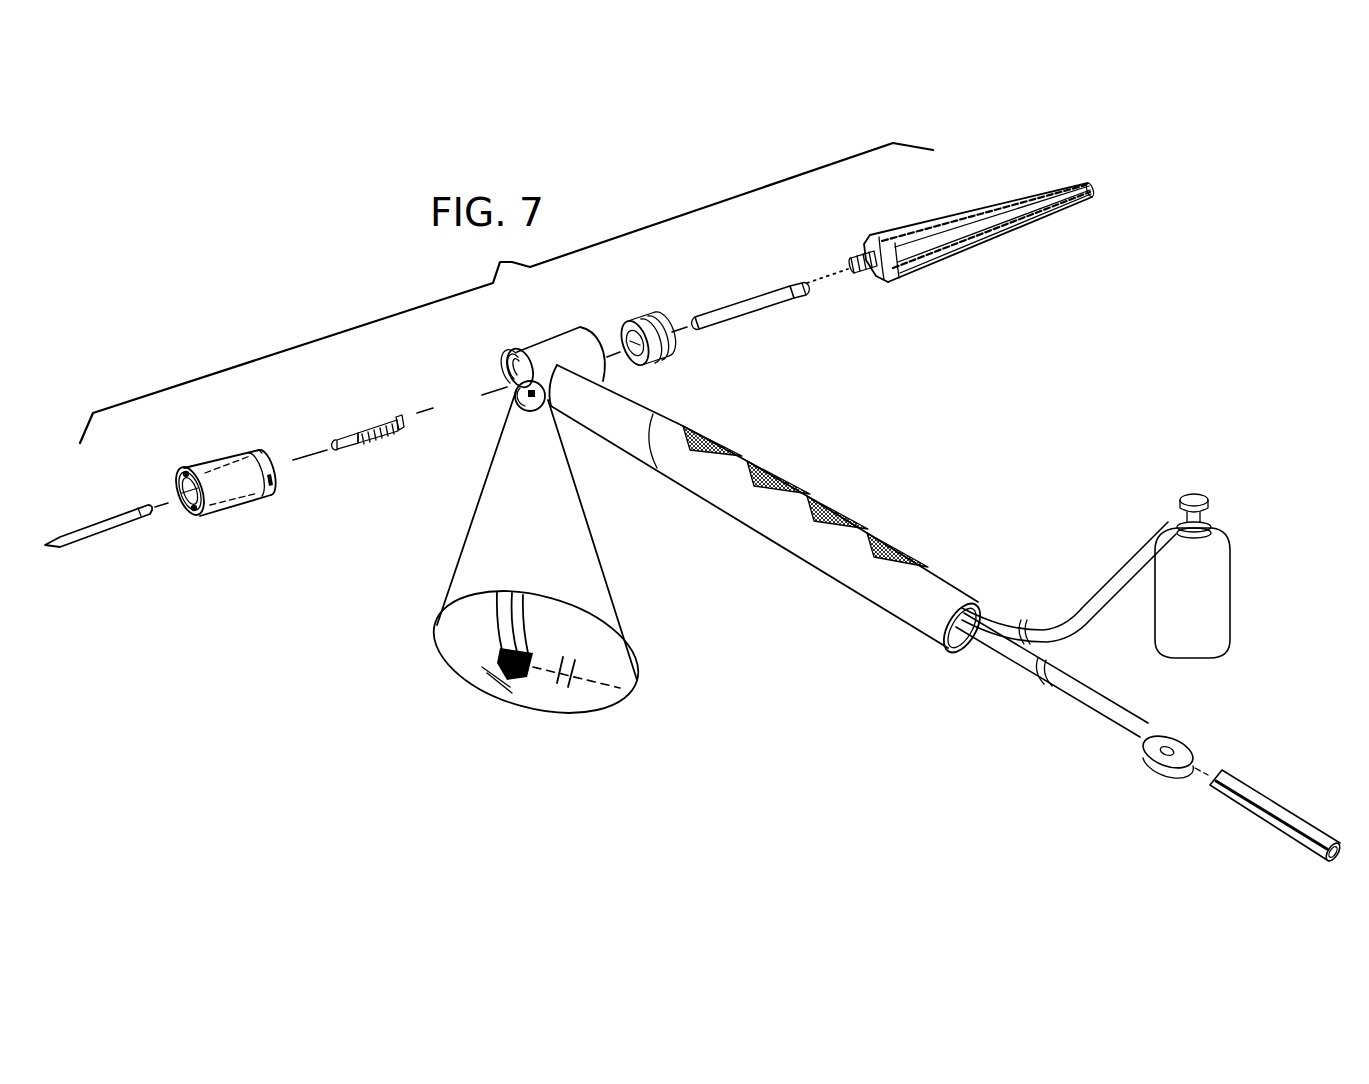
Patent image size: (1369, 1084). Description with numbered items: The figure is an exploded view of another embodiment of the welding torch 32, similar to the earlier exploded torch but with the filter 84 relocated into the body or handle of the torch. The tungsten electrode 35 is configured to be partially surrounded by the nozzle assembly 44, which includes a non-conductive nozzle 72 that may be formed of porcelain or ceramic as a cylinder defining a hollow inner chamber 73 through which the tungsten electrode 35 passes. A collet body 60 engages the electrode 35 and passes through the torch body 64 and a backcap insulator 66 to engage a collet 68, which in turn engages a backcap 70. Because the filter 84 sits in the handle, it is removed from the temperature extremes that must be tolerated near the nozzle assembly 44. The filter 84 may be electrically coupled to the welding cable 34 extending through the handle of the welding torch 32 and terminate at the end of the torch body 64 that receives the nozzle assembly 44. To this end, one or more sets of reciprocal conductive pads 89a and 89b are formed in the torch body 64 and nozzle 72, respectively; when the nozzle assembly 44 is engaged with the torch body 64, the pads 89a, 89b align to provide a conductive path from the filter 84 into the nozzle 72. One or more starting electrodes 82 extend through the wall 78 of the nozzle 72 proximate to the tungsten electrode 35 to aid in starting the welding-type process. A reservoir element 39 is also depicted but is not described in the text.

The welding torch 32 is at (1025, 426).
The welding cable 34 is at (1092, 703).
The tungsten electrode 35 is at (103, 530).
The fluid reservoir 39 is at (1220, 610).
The nozzle assembly 44 is at (243, 520).
The collet body 60 is at (367, 430).
The torch body 64 is at (552, 337).
The backcap insulator 66 is at (647, 317).
The collet 68 is at (738, 293).
The backcap 70 is at (915, 224).
The non-conductive nozzle 72 is at (193, 514).
The inner chamber 73 is at (180, 487).
The wall of the nozzle 78 is at (1288, 810).
The starting electrodes 82 is at (176, 468).
The filter 84 is at (574, 690).
The conductive pads of the torch body 89a is at (510, 374).
The conductive pads of the nozzle 89b is at (262, 452).